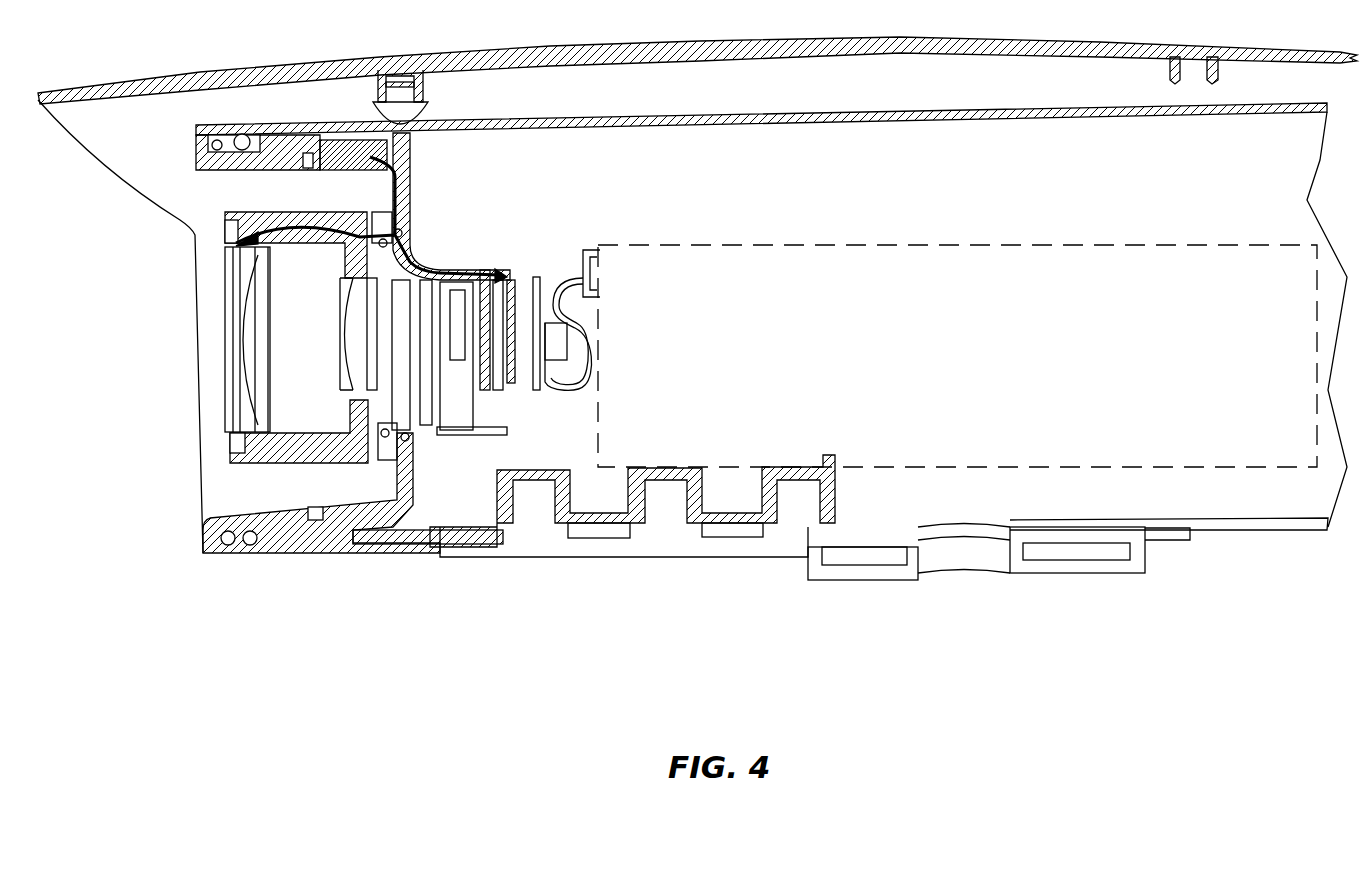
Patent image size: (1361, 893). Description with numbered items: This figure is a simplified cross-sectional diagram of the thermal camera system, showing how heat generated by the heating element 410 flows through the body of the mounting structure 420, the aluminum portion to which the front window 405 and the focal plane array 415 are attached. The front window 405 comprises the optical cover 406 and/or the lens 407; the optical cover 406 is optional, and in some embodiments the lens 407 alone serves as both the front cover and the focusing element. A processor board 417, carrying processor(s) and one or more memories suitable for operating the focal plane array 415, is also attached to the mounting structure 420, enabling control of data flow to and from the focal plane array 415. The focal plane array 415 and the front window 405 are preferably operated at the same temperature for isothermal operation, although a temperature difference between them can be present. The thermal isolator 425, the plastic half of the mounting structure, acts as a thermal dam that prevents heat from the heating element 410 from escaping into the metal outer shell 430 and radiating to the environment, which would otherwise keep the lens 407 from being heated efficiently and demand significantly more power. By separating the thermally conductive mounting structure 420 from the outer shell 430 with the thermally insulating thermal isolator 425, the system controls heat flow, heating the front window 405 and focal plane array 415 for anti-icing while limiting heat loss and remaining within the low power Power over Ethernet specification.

The front window 405 is at (260, 463).
The optical cover 406 is at (220, 255).
The lens 407 is at (255, 387).
The heating element 410 is at (353, 147).
The focal plane array 415 is at (510, 280).
The processor board 417 is at (537, 293).
The mounting structure 420 is at (410, 157).
The thermal isolator 425 is at (260, 168).
The outer shell 430 is at (950, 118).